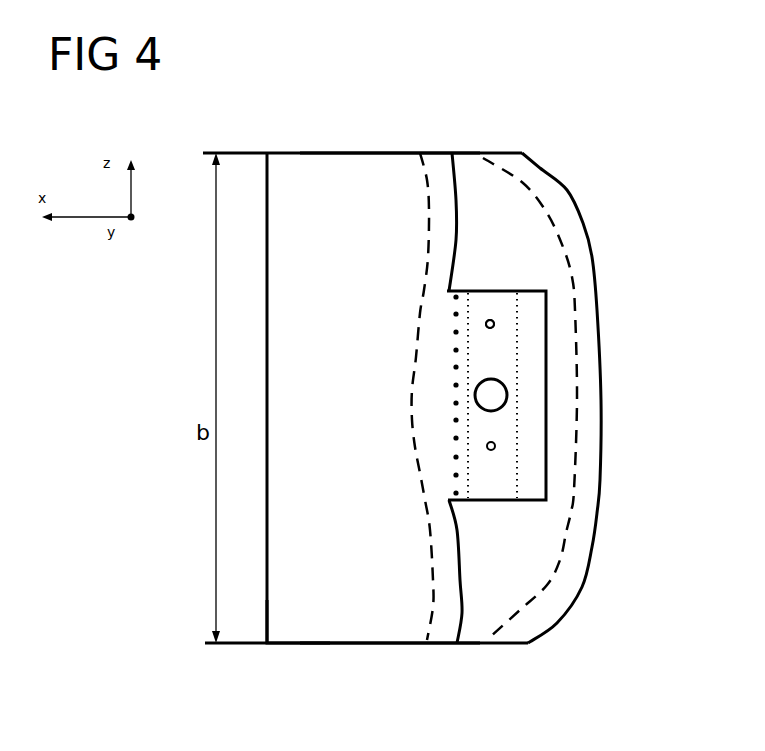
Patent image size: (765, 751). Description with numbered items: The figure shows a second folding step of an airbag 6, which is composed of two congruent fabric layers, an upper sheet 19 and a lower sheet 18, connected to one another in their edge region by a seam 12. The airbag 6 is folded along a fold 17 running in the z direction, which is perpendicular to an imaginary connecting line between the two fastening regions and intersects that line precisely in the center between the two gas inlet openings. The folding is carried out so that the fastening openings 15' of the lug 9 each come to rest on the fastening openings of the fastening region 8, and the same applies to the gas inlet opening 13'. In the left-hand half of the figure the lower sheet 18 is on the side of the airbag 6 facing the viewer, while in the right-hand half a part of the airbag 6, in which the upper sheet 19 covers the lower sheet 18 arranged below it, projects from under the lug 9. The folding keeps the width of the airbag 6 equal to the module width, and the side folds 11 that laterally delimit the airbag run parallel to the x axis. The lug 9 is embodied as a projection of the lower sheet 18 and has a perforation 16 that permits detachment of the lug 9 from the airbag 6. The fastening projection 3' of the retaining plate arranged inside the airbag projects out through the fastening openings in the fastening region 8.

The fastening projection 3' is at (425, 404).
The airbag 6 is at (328, 183).
The fastening region 8 is at (505, 477).
The lug 9 is at (533, 360).
The side folds 11 is at (387, 152).
The seam 12 is at (552, 577).
The gas inlet opening 13' is at (572, 396).
The fastening openings 15' is at (579, 294).
The perforation 16 is at (475, 292).
The fold 17 is at (267, 384).
The lower sheet 18 is at (307, 608).
The upper sheet 19 is at (482, 198).